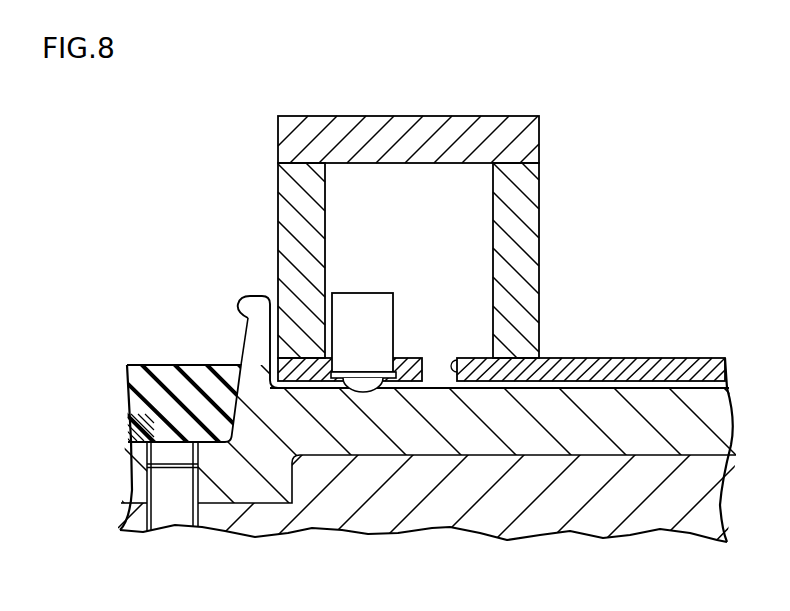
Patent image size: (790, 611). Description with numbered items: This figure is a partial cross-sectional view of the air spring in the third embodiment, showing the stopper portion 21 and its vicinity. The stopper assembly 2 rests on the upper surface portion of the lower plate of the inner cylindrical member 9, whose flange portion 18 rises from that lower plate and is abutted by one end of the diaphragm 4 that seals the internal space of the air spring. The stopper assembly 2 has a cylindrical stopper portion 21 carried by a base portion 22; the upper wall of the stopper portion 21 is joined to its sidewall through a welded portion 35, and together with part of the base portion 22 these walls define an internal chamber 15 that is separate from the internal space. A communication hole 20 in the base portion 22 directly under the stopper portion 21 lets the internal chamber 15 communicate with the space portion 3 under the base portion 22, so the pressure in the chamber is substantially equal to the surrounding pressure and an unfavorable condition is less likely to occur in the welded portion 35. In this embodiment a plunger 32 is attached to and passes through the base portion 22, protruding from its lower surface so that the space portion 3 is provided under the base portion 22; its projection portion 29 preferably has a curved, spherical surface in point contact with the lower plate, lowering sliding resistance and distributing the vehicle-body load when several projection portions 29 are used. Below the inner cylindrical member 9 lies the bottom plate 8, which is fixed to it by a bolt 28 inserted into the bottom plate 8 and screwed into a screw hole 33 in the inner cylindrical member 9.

The stopper assembly 2 is at (480, 235).
The space portion 3 is at (603, 389).
The diaphragm 4 is at (157, 389).
The bottom plate 8 is at (540, 508).
The inner cylindrical member 9 is at (396, 433).
The internal chamber 15 is at (340, 222).
The flange portion 18 is at (262, 318).
The communication hole 20 is at (452, 357).
The stopper portion 21 is at (527, 199).
The base portion 22 is at (587, 372).
The bolt 28 is at (174, 510).
The projection portion 29 is at (395, 385).
The plunger 32 is at (382, 312).
The screw hole 33 is at (163, 453).
The welded portion 35 is at (517, 163).